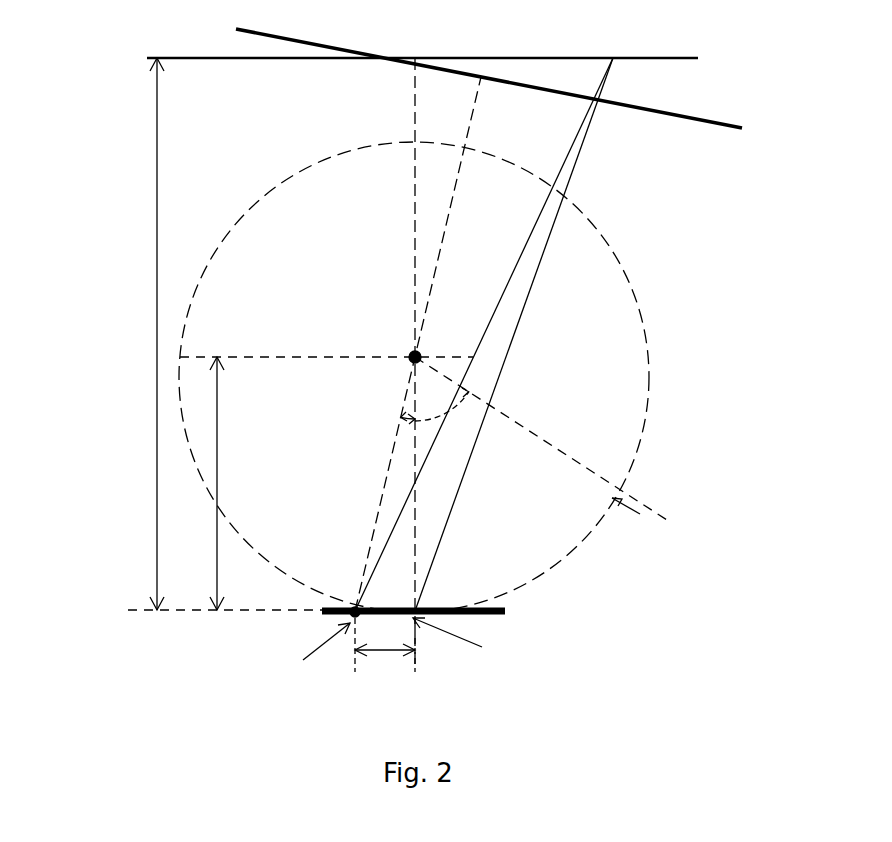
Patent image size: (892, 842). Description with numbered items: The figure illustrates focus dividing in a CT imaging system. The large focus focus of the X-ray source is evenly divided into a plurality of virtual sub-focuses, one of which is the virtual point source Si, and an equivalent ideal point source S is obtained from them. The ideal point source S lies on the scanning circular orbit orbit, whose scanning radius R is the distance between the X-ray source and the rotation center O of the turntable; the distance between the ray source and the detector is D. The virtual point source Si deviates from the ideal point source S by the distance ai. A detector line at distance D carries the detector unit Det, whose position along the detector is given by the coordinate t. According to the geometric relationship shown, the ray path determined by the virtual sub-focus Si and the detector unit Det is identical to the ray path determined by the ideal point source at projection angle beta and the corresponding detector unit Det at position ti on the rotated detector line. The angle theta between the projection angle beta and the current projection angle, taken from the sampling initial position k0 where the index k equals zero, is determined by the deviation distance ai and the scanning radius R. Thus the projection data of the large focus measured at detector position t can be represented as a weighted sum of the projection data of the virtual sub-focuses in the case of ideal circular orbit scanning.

The detector unit position t is at (422, 44).
The equivalent detector position ti is at (489, 79).
The detector unit Det is at (506, 316).
The circular orbit is at (434, 377).
The rotation center O is at (423, 364).
The sampling initial position k0 is at (670, 537).
The source-to-detector distance D is at (176, 334).
The scanning radius R is at (225, 483).
The angle theta_i theta is at (389, 438).
The projection angle beta_i beta is at (442, 430).
The large focus is at (413, 584).
The virtual sub-focus Si is at (201, 638).
The ideal point source S is at (562, 640).
The deviation distance ai is at (385, 642).